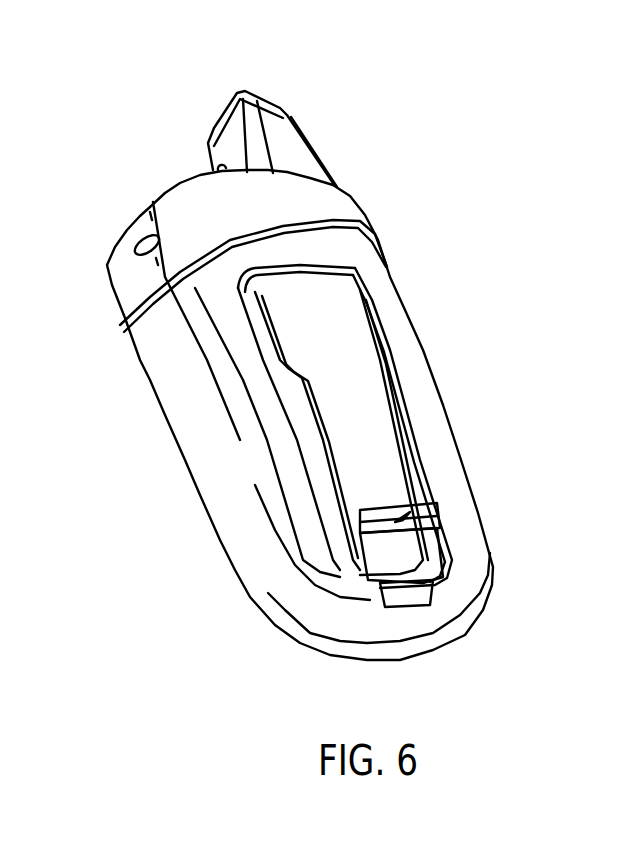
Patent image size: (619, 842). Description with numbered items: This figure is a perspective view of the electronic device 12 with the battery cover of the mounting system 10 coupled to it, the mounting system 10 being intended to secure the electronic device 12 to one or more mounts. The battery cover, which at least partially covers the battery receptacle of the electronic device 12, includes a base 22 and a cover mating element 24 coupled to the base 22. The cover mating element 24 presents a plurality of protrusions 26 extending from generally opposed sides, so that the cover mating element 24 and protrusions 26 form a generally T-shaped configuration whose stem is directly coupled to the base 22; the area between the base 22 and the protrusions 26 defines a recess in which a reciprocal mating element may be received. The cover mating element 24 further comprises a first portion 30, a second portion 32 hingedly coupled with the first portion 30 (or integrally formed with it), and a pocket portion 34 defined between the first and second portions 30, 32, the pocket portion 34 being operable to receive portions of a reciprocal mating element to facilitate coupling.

The mounting system 10 is at (175, 93).
The electronic device 12 is at (177, 230).
The base 22 is at (420, 460).
The cover mating element 24 is at (357, 380).
The protrusions 26 is at (363, 293).
The first portion 30 is at (372, 435).
The second portion 32 is at (420, 565).
The pocket portion 34 is at (400, 520).